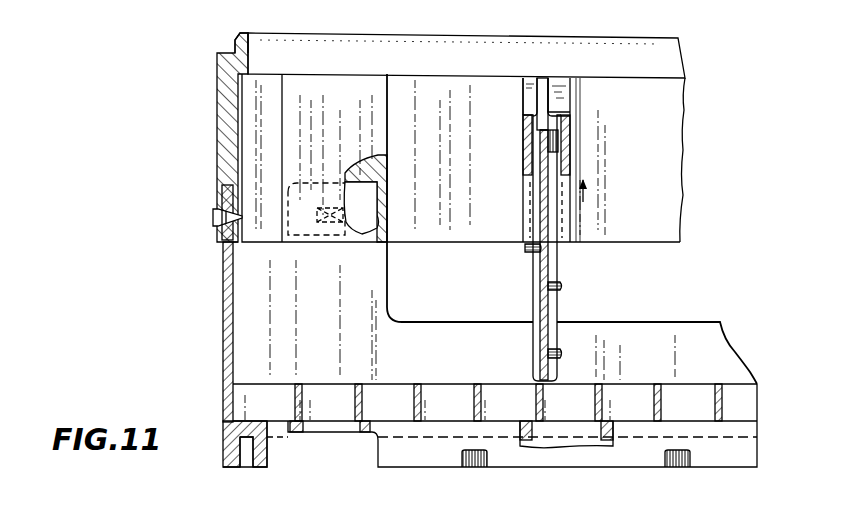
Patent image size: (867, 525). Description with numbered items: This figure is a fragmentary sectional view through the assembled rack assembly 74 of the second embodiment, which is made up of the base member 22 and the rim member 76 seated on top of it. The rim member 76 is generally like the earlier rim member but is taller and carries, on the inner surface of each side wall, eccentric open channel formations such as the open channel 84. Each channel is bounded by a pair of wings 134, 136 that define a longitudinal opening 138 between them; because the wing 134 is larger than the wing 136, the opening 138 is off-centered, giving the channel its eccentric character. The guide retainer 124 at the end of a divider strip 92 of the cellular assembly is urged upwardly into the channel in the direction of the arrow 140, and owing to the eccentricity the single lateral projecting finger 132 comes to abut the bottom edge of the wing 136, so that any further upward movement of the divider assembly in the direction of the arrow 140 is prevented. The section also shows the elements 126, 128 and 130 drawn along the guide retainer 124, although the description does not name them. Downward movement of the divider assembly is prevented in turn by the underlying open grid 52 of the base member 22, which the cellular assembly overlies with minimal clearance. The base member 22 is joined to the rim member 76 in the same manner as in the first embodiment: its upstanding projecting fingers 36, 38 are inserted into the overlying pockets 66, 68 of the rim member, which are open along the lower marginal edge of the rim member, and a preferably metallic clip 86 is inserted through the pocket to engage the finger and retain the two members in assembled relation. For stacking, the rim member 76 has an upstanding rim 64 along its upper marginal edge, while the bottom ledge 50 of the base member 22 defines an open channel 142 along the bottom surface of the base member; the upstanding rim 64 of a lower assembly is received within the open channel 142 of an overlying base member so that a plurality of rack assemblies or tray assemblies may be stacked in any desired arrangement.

The base member 22 is at (221, 342).
The projecting finger 36 is at (222, 272).
The projecting finger 38 is at (366, 194).
The bottom ledge 50 is at (242, 426).
The open grid 52 is at (430, 382).
The upstanding rim 64 is at (243, 33).
The pocket 66 is at (216, 150).
The pocket 68 is at (378, 165).
The rack assembly 74 is at (622, 14).
The rim member 76 is at (672, 66).
The open channel formation 84 is at (543, 92).
The clip 86 is at (212, 217).
The strip 92 is at (558, 150).
The guide retainer 124 is at (552, 264).
The lower nut 126 is at (562, 354).
The middle nut 128 is at (563, 287).
The rod head 130 is at (539, 128).
The projecting finger 132 is at (528, 252).
The wing 134 is at (566, 97).
The wing 136 is at (528, 95).
The longitudinal opening 138 is at (558, 78).
The arrow 140 is at (586, 190).
The open channel 142 is at (247, 466).